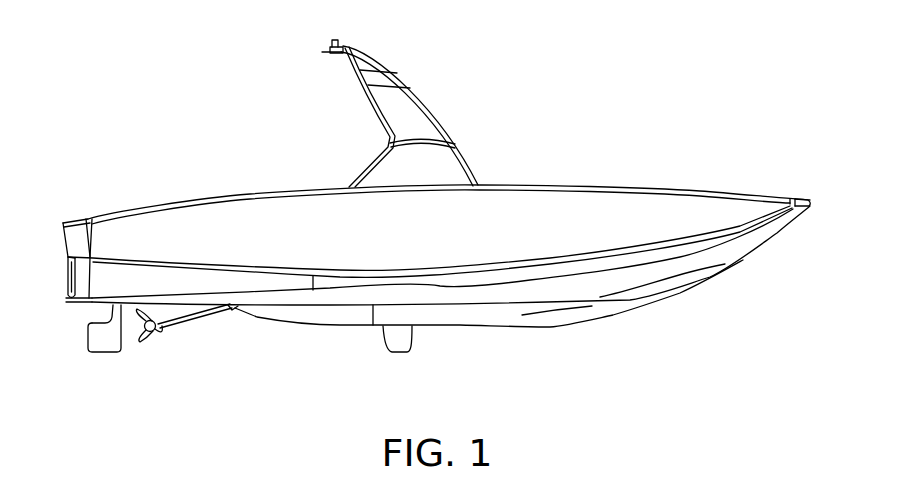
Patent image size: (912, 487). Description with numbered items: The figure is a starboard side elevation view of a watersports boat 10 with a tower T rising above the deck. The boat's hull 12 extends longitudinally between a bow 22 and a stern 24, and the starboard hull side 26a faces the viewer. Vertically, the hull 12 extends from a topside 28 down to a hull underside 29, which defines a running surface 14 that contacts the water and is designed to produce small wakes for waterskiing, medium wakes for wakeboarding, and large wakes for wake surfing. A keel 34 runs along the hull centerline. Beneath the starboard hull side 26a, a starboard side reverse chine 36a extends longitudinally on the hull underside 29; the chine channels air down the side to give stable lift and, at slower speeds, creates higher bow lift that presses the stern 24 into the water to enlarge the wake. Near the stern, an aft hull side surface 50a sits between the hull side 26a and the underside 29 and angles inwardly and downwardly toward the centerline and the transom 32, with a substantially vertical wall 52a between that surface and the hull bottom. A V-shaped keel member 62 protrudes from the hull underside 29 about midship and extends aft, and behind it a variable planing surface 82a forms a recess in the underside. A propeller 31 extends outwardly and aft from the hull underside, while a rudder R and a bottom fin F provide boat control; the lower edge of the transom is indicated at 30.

The watersports boat 10 is at (243, 147).
The tower T is at (319, 61).
The hull 12 is at (508, 175).
The starboard hull side 26a is at (383, 245).
The topside 28 is at (568, 186).
The bow 22 is at (810, 224).
The stern 24 is at (52, 249).
The transom 32 is at (68, 272).
The transom bottom edge 30 is at (70, 302).
The starboard aft hull side surface 50a is at (116, 274).
The starboard substantially vertical wall 52a is at (157, 300).
The running surface 14 is at (304, 372).
The hull underside 29 is at (641, 353).
The keel 34 is at (552, 327).
The starboard side reverse chine 36a is at (694, 274).
The V-shaped keel member 62 is at (432, 352).
The bottom fin F is at (384, 332).
The starboard variable planing surface 82a is at (91, 314).
The rudder R is at (110, 345).
The propeller 31 is at (160, 340).